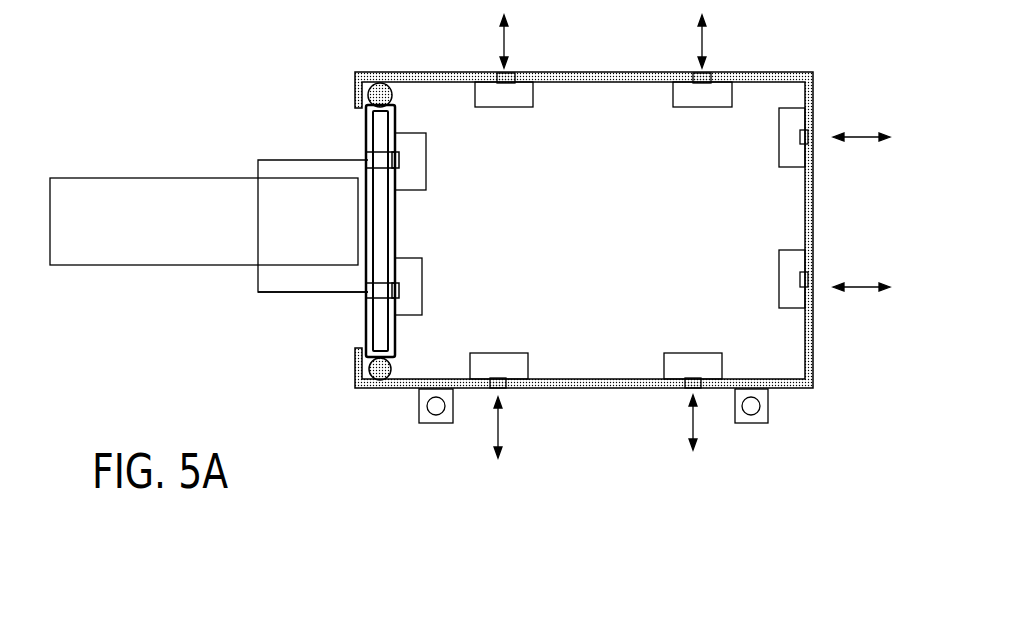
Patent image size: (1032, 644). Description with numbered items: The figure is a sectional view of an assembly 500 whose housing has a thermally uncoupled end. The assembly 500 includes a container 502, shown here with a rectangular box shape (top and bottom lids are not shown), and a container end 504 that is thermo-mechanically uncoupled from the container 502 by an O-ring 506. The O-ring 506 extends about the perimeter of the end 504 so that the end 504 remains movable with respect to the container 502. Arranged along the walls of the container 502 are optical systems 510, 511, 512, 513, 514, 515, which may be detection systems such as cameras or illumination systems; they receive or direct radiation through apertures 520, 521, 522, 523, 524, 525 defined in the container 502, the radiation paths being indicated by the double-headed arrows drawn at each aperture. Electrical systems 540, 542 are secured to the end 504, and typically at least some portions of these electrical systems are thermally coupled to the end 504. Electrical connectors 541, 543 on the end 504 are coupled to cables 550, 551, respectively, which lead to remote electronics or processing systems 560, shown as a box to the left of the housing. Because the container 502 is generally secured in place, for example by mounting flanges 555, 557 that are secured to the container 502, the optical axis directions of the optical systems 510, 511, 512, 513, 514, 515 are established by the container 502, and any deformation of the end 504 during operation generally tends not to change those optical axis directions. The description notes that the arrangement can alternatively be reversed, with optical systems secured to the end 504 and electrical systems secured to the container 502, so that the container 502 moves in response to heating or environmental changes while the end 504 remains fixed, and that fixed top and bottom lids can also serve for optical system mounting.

The assembly 500 is at (388, 413).
The container 502 is at (812, 337).
The container end 504 is at (370, 330).
The O-ring 506 is at (390, 372).
The optical system 510 is at (500, 353).
The optical system 511 is at (665, 368).
The optical system 512 is at (779, 298).
The optical system 513 is at (779, 152).
The optical system 514 is at (692, 108).
The optical system 515 is at (512, 108).
The aperture 520 is at (495, 390).
The aperture 521 is at (690, 390).
The aperture 522 is at (806, 285).
The aperture 523 is at (806, 140).
The aperture 524 is at (706, 77).
The aperture 525 is at (508, 77).
The electrical system 540 is at (428, 160).
The electrical connector 541 is at (367, 152).
The electrical system 542 is at (423, 262).
The electrical connector 543 is at (368, 310).
The cable 550 is at (258, 162).
The cable 551 is at (300, 292).
The mounting flange 555 is at (422, 425).
The mounting flange 557 is at (748, 425).
The remote electronics or processing systems 560 is at (133, 265).